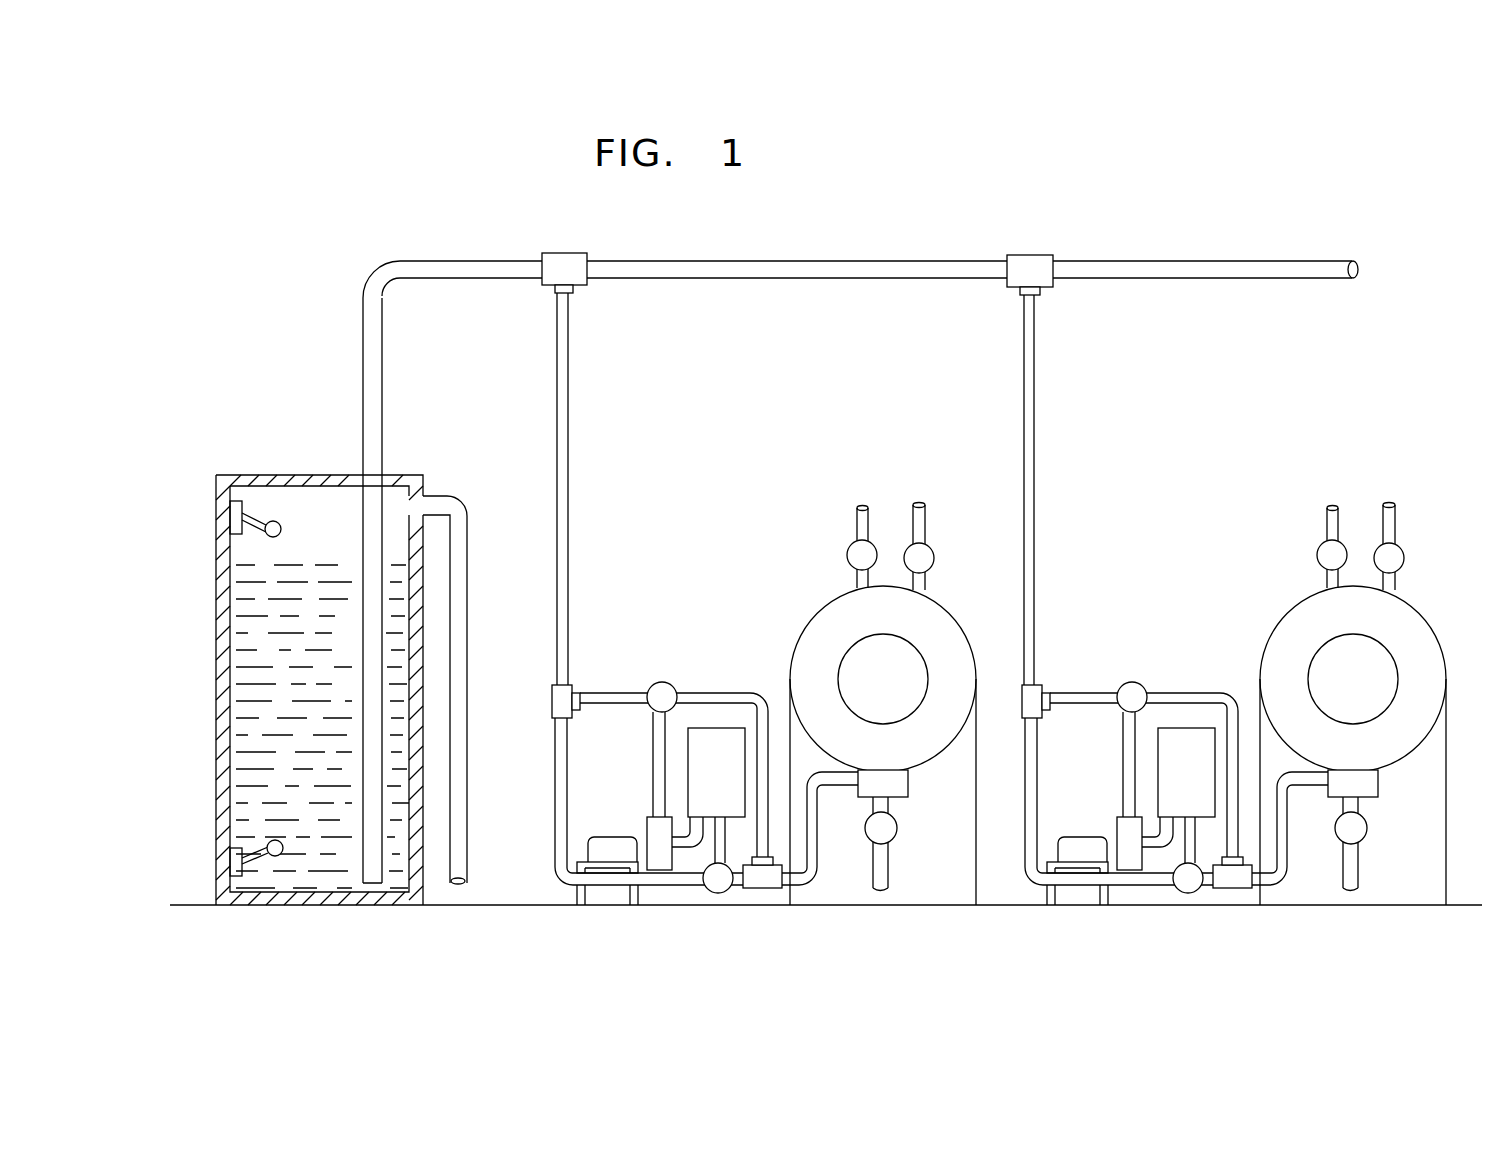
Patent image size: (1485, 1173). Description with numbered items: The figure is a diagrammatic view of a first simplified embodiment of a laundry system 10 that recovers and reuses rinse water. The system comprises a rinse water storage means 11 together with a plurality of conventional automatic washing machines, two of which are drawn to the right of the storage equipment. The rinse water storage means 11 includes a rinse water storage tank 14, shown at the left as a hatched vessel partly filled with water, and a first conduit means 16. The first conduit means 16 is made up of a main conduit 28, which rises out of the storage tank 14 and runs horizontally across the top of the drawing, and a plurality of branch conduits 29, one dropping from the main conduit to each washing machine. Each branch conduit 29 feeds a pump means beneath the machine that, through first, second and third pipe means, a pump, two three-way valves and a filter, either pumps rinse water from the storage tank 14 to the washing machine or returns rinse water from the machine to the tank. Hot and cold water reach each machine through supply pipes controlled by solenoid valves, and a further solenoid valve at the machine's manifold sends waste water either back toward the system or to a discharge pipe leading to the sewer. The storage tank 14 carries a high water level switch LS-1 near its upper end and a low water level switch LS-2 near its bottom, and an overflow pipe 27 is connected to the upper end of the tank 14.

The laundry system 10 is at (1304, 235).
The rinse water storage means 11 is at (350, 266).
The rinse water storage tank 14 is at (301, 478).
The first conduit means 16 is at (490, 250).
The overflow pipe 27 is at (460, 815).
The main conduit 28 is at (376, 320).
The branch conduit 29 is at (570, 325).
The high water level switch LS-1 is at (255, 521).
The low water level switch LS-2 is at (264, 847).